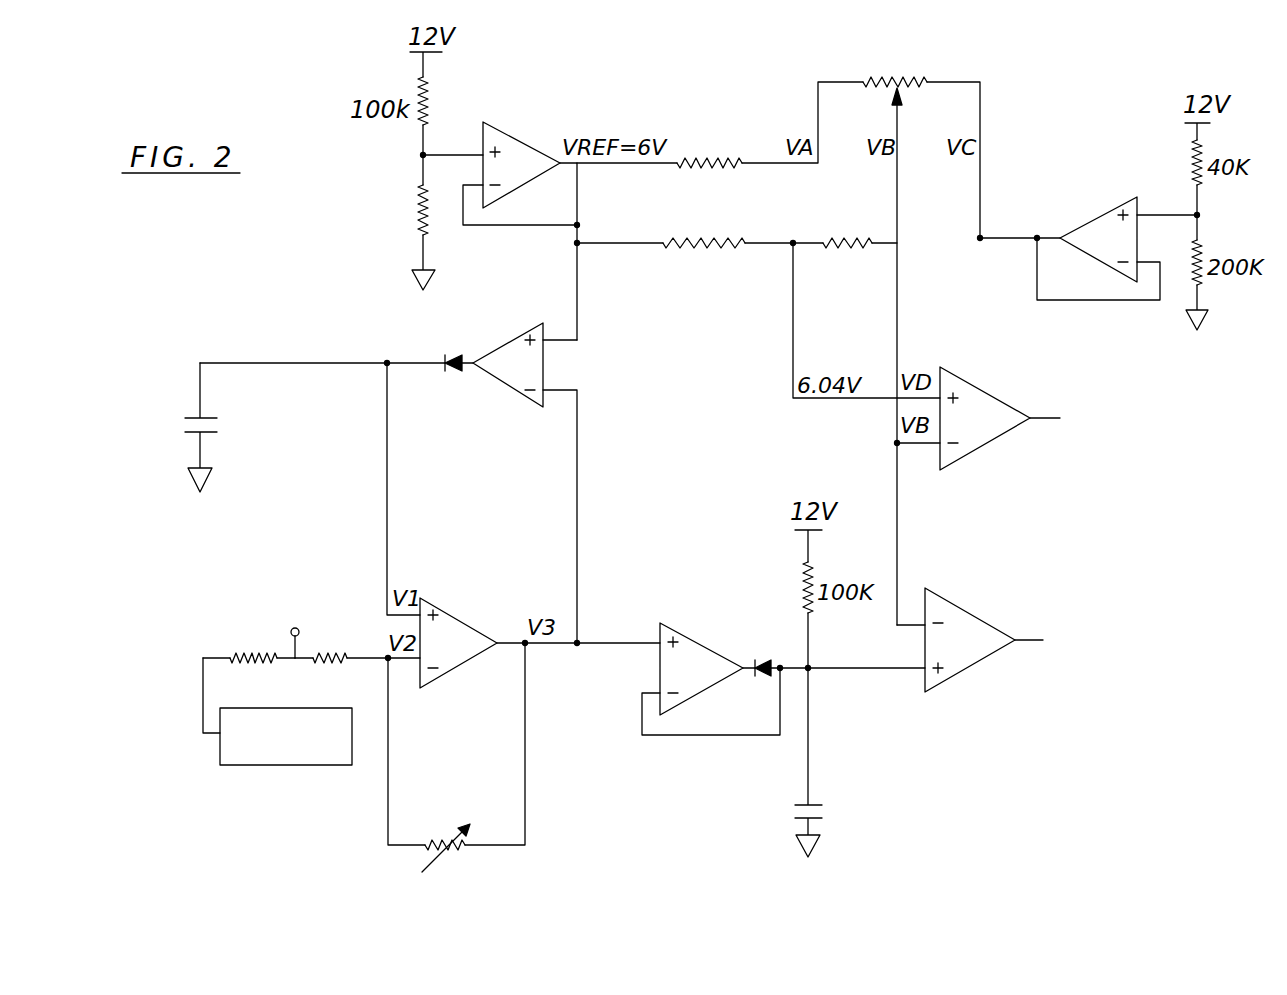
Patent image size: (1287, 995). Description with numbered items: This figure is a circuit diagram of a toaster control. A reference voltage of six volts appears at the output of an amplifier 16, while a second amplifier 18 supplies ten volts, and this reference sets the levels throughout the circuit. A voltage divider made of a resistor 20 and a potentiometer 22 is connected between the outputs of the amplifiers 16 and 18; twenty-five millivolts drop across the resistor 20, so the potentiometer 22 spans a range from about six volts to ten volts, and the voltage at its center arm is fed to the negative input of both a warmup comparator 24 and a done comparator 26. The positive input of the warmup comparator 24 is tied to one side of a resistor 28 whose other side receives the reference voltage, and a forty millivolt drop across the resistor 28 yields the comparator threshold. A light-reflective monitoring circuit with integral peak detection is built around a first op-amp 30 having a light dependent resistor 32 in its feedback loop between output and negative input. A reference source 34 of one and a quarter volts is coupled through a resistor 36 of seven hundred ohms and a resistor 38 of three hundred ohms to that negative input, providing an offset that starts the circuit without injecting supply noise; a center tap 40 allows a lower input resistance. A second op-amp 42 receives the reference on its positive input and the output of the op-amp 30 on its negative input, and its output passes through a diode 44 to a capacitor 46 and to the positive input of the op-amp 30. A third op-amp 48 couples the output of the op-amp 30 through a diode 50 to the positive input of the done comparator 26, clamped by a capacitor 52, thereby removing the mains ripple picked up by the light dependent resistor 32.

The amplifier 16 is at (522, 136).
The second amplifier 18 is at (1092, 212).
The resistor 20 is at (710, 155).
The potentiometer 22 is at (884, 75).
The warmup comparator 24 is at (993, 393).
The done comparator 26 is at (980, 617).
The resistor 28 is at (704, 255).
The first op-amp 30 is at (465, 612).
The light dependent resistor 32 is at (430, 840).
The reference source 34 is at (280, 768).
The resistor 36 is at (247, 650).
The resistor 38 is at (330, 650).
The center tap 40 is at (295, 625).
The second op-amp 42 is at (533, 408).
The diode 44 is at (455, 385).
The capacitor 46 is at (192, 408).
The third op-amp 48 is at (670, 625).
The diode 50 is at (762, 652).
The capacitor 52 is at (800, 805).